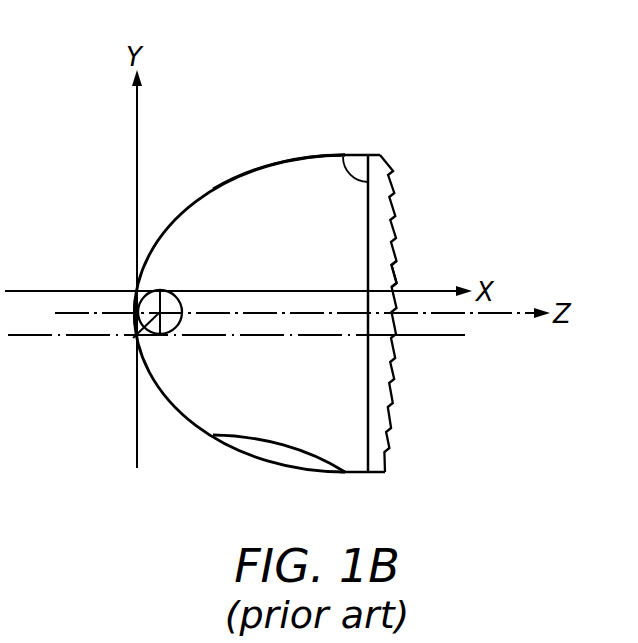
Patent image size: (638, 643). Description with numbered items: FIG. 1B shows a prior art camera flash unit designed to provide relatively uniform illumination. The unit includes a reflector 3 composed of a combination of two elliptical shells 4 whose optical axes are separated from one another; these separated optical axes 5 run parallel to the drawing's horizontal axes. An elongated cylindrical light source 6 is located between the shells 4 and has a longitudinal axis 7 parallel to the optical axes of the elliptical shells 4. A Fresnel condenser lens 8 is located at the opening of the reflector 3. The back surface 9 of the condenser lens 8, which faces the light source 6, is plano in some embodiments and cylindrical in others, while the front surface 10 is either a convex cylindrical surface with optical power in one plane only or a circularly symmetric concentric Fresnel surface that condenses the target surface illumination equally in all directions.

The reflector 3 is at (212, 185).
The elliptical shells 4 is at (280, 160).
The optical axis lines 5 is at (437, 290).
The elongated cylindrical light source 6 is at (190, 297).
The longitudinal axis 7 is at (136, 334).
The Fresnel condenser lens 8 is at (386, 184).
The back surface 9 is at (345, 156).
The front surface 10 is at (405, 230).